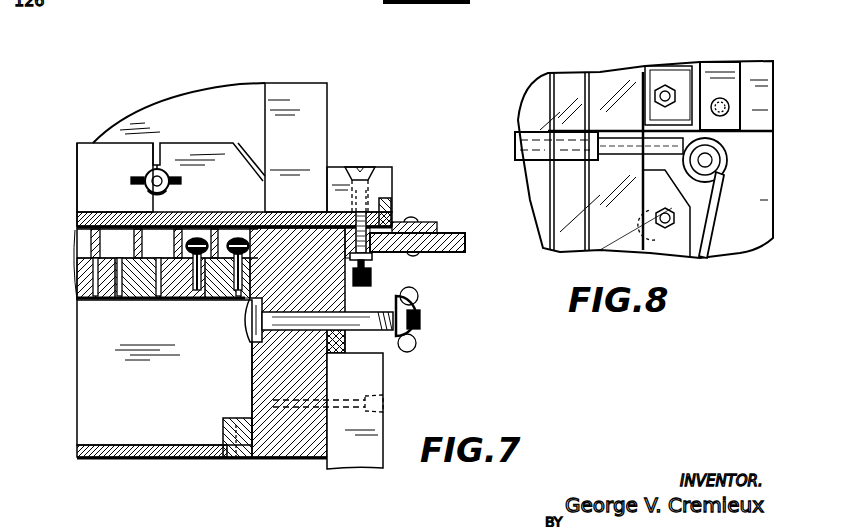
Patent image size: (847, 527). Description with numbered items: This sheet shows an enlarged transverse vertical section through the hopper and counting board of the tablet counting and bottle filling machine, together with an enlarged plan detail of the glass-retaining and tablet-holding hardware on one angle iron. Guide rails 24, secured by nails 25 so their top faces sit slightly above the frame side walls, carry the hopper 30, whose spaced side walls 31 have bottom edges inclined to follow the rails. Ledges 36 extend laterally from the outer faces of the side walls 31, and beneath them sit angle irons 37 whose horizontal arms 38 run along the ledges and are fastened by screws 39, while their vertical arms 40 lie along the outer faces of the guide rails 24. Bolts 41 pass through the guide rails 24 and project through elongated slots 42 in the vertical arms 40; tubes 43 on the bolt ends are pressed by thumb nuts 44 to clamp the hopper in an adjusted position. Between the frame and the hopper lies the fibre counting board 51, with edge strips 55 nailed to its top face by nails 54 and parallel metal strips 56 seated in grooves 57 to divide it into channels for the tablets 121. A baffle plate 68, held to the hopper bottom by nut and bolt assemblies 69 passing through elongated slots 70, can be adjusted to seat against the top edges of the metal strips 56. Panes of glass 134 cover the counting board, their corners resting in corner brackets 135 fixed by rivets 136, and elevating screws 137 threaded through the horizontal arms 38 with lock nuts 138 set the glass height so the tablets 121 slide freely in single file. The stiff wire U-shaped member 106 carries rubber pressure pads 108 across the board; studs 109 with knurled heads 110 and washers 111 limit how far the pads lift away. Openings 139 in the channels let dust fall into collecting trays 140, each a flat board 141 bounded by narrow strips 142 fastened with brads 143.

In FIG. 7, the guide rails 24 is at (262, 373).
In FIG. 7, the nails 25 is at (378, 395).
In FIG. 7, the hopper 30 is at (221, 79).
In FIG. 7, the side walls 31 is at (318, 123).
In FIG. 7, the ledges 36 is at (382, 175).
In FIG. 7, the angle irons 37 is at (474, 254).
In FIG. 8, the angle irons 37 is at (757, 46).
In FIG. 7, the horizontal arms 38 is at (450, 237).
In FIG. 7, the screws 39 is at (367, 168).
In FIG. 7, the vertical arms 40 is at (343, 355).
In FIG. 7, the bolts 41 is at (252, 350).
In FIG. 7, the elongated slots 42 is at (340, 312).
In FIG. 7, the tubes 43 is at (395, 342).
In FIG. 7, the thumb nuts 44 is at (418, 342).
In FIG. 7, the counting board 51 is at (76, 288).
In FIG. 8, the counting board 51 is at (532, 100).
In FIG. 7, the nails 54 is at (302, 240).
In FIG. 7, the edge strips 55 is at (274, 235).
In FIG. 7, the metal strips 56 is at (168, 243).
In FIG. 8, the metal strips 56 is at (568, 72).
In FIG. 7, the grooves 57 is at (120, 298).
In FIG. 7, the baffle plate 68 is at (200, 152).
In FIG. 7, the nut and bolt assemblies 69 is at (148, 190).
In FIG. 7, the elongated slots 70 is at (160, 165).
In FIG. 8, the U-shaped member 106 is at (712, 238).
In FIG. 8, the pressure pads 108 is at (520, 148).
In FIG. 8, the studs 109 is at (718, 157).
In FIG. 8, the knurled heads 110 is at (722, 170).
In FIG. 8, the washers 111 is at (720, 182).
In FIG. 7, the tablets 121 is at (238, 238).
In FIG. 7, the panes of glass 134 is at (97, 212).
In FIG. 8, the panes of glass 134 is at (614, 80).
In FIG. 7, the corner brackets 135 is at (390, 222).
In FIG. 7, the rivets 136 is at (410, 228).
In FIG. 8, the rivets 136 is at (729, 104).
In FIG. 7, the elevating screws 137 is at (372, 277).
In FIG. 8, the elevating screws 137 is at (666, 90).
In FIG. 7, the lock nuts 138 is at (372, 259).
In FIG. 8, the lock nuts 138 is at (680, 78).
In FIG. 7, the openings 139 is at (178, 300).
In FIG. 7, the collecting trays 140 is at (87, 373).
In FIG. 7, the flat board 141 is at (125, 446).
In FIG. 7, the narrow strips 142 is at (222, 420).
In FIG. 7, the brads 143 is at (232, 430).